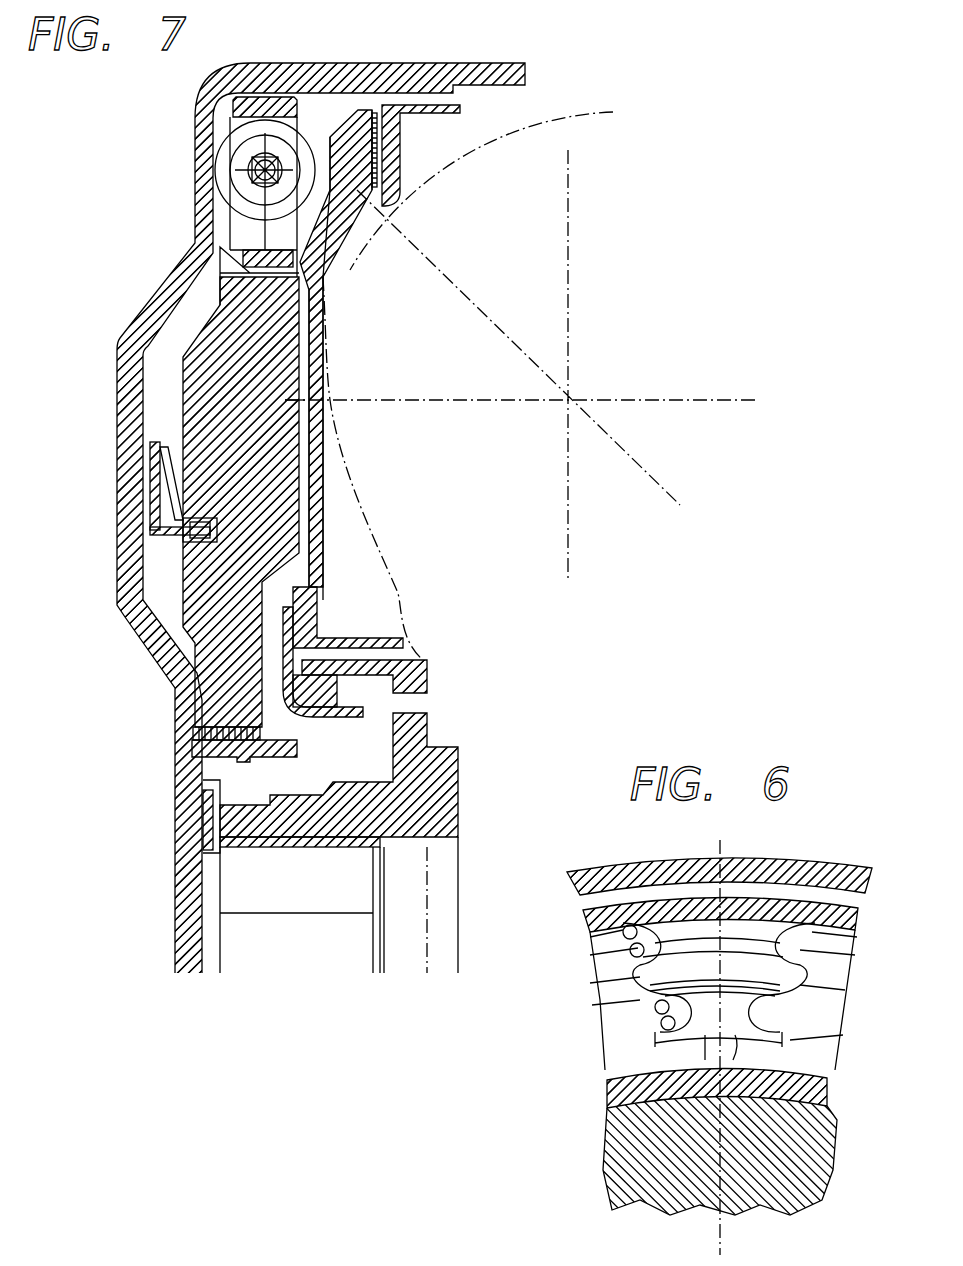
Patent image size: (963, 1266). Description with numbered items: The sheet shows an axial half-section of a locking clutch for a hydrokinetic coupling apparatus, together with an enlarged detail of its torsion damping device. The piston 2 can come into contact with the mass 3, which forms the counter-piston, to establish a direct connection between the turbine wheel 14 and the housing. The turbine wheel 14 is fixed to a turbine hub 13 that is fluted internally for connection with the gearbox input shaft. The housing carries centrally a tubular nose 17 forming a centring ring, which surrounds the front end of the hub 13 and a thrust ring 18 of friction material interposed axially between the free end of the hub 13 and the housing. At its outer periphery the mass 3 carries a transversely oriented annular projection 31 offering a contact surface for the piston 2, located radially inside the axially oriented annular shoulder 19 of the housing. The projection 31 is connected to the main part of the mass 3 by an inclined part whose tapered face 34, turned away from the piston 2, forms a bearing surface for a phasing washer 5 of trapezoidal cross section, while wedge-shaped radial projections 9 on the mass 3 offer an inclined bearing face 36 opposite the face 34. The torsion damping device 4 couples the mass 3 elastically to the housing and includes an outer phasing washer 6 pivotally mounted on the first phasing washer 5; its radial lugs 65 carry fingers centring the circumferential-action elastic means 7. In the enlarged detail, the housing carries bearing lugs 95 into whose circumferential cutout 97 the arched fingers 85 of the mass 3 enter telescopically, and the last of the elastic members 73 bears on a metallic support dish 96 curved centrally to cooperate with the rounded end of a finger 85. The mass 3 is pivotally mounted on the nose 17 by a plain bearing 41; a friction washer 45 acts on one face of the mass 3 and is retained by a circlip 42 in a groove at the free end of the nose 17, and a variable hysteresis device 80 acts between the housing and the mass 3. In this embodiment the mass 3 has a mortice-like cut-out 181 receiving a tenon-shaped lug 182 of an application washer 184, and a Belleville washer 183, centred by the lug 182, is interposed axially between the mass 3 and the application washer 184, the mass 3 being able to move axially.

In FIG. 7, the piston 2 is at (330, 348).
In FIG. 7, the mass 3 is at (198, 352).
In FIG. 6, the mass 3 is at (617, 1172).
In FIG. 7, the torsion damping device 4 is at (315, 200).
In FIG. 7, the phasing washer 5 is at (220, 290).
In FIG. 6, the phasing washer 5 is at (607, 1090).
In FIG. 7, the outer phasing washer 6 is at (281, 100).
In FIG. 6, the outer phasing washer 6 is at (590, 912).
In FIG. 7, the circumferential-action elastic means 7 is at (222, 153).
In FIG. 7, the radial projections 9 is at (220, 253).
In FIG. 7, the turbine hub 13 is at (456, 784).
In FIG. 7, the turbine wheel 14 is at (597, 112).
In FIG. 7, the nose 17 is at (203, 793).
In FIG. 7, the thrust ring 18 is at (203, 856).
In FIG. 7, the annular shoulder 19 is at (430, 63).
In FIG. 6, the annular shoulder 19 is at (812, 868).
In FIG. 7, the annular projection 31 is at (352, 112).
In FIG. 7, the face 34 is at (358, 193).
In FIG. 7, the inclined bearing face 36 is at (245, 250).
In FIG. 7, the plain bearing 41 is at (195, 735).
In FIG. 7, the circlip 42 is at (367, 702).
In FIG. 7, the friction washer 45 is at (245, 724).
In FIG. 7, the radial lugs 65 is at (248, 180).
In FIG. 6, the elastic members 73 is at (687, 963).
In FIG. 7, the variable hysteresis device 80 is at (147, 430).
In FIG. 6, the fingers 85 is at (660, 1000).
In FIG. 6, the bearing lugs 95 is at (705, 1035).
In FIG. 6, the support dish 96 is at (655, 998).
In FIG. 6, the circumferential cutout 97 is at (745, 1030).
In FIG. 7, the cut-out 181 is at (193, 540).
In FIG. 7, the lug 182 is at (210, 528).
In FIG. 7, the Belleville washer 183 is at (160, 490).
In FIG. 7, the application washer 184 is at (158, 450).